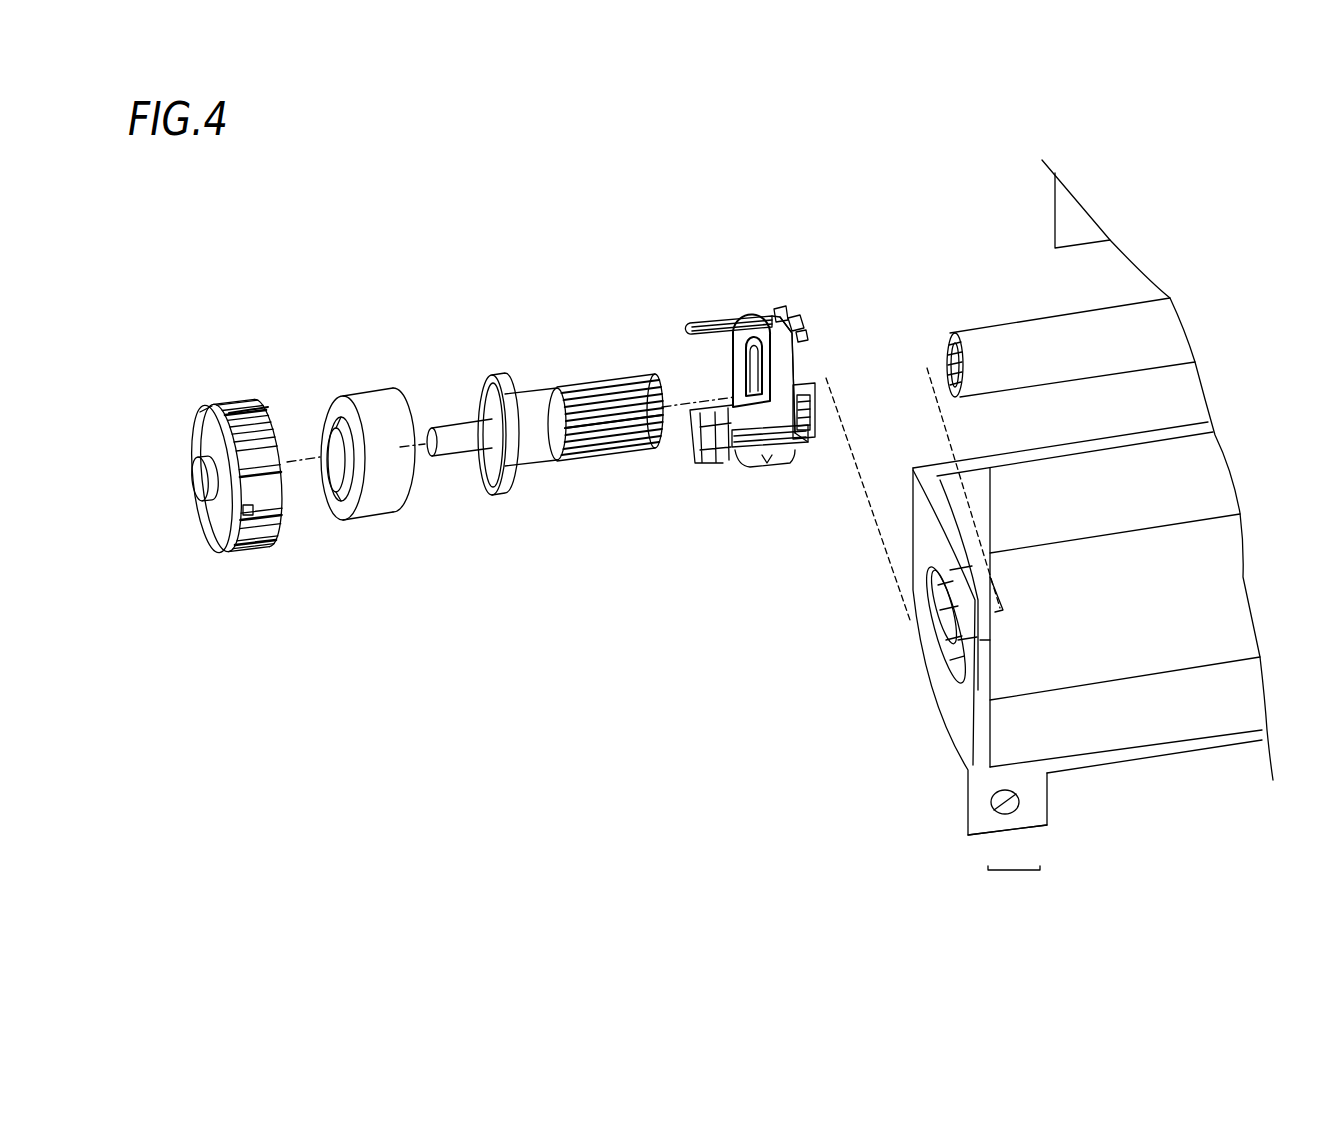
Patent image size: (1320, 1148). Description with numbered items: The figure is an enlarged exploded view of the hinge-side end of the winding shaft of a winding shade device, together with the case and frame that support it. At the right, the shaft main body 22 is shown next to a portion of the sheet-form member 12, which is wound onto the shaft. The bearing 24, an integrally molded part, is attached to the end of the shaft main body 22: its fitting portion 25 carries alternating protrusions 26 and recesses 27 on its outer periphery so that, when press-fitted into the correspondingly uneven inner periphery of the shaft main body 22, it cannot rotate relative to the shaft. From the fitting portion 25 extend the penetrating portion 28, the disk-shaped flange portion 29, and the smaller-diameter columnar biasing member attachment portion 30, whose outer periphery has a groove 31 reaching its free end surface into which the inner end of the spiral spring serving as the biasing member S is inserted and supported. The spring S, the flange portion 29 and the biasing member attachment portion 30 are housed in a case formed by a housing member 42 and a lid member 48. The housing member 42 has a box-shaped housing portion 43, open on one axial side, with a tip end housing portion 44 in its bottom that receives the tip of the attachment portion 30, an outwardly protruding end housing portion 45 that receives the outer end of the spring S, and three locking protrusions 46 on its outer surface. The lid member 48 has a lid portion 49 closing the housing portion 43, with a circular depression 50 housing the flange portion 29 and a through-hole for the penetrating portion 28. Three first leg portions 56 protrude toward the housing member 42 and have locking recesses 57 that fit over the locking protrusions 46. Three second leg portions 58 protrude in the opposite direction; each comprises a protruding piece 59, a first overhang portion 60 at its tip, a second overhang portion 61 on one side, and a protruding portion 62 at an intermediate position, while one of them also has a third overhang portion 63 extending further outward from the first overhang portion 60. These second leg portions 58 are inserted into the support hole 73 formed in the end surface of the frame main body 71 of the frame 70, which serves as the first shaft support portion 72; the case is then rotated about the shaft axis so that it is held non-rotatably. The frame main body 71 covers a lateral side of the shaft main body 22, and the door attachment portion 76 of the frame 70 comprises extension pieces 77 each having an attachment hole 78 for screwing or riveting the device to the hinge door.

The sheet-form member 12 is at (1060, 220).
The shaft main body 22 is at (997, 332).
The bearing 24 is at (537, 481).
The fitting portion 25 is at (580, 453).
The protrusions 26 is at (657, 427).
The recesses 27 is at (653, 396).
The penetrating portion 28 is at (528, 402).
The flange portion 29 is at (484, 390).
The biasing member attachment portion 30 is at (467, 450).
The groove 31 is at (428, 434).
The housing member 42 is at (185, 430).
The housing portion 43 is at (194, 420).
The tip end housing portion 44 is at (212, 498).
The end housing portion 45 is at (248, 413).
The locking protrusions 46 is at (217, 405).
The lid member 48 is at (737, 313).
The lid portion 49 is at (778, 358).
The depression 50 is at (730, 361).
The first leg portions 56 is at (710, 322).
The locking recesses 57 is at (748, 451).
The second leg portions 58 is at (805, 316).
The protruding piece 59 is at (801, 341).
The first overhang portion 60 is at (815, 410).
The second overhang portion 61 is at (810, 378).
The protruding portion 62 is at (800, 438).
The third overhang portion 63 is at (779, 318).
The frame 70 is at (1129, 775).
The frame main body 71 is at (1181, 722).
The first shaft support portion 72 is at (953, 698).
The support hole 73 is at (935, 625).
The door attachment portion 76 is at (1014, 882).
The extension pieces 77 is at (1025, 822).
The attachment hole 78 is at (998, 815).
The biasing member S is at (370, 510).